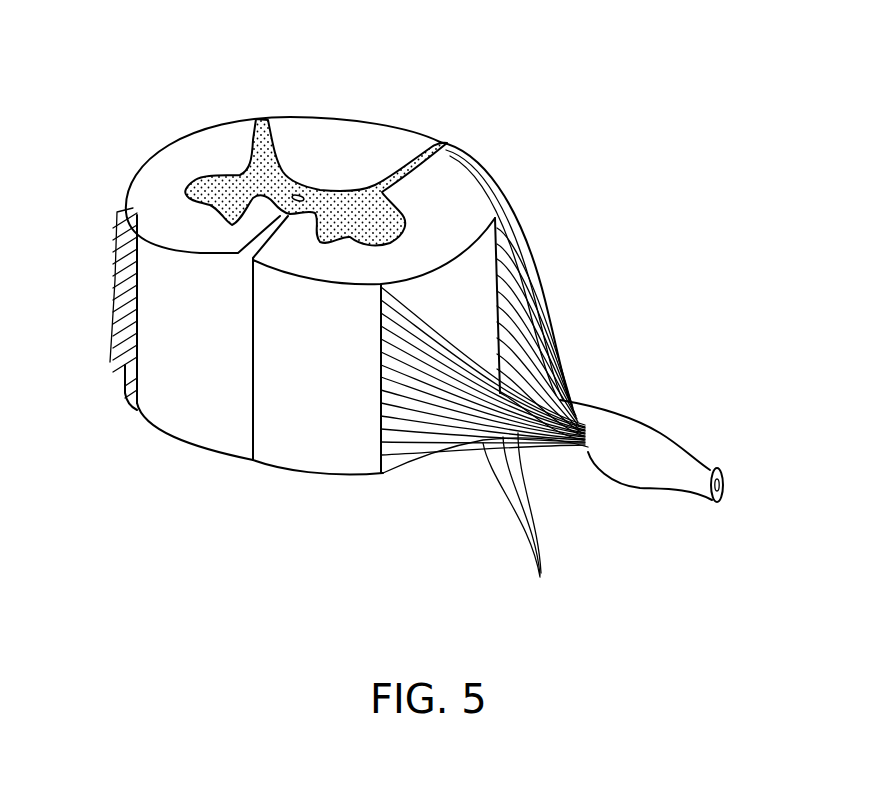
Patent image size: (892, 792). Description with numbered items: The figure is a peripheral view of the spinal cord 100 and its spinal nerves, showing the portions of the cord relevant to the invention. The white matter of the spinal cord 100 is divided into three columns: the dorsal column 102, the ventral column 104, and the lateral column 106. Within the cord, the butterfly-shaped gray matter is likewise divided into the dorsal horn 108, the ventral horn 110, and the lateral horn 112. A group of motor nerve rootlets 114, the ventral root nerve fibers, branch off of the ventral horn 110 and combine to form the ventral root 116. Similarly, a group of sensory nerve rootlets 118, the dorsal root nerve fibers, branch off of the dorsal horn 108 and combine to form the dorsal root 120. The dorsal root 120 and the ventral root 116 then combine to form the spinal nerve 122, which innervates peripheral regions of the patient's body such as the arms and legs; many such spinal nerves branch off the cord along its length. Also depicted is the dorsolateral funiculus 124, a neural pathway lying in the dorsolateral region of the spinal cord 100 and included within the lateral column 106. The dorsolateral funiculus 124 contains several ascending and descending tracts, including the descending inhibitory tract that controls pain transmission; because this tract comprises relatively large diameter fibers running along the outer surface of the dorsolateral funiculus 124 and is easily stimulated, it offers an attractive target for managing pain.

The spinal cord 100 is at (421, 312).
The dorsal column 102 is at (385, 131).
The ventral column 104 is at (185, 228).
The lateral column 106 is at (190, 153).
The dorsal horn 108 is at (258, 120).
The ventral horn 110 is at (187, 193).
The lateral horn 112 is at (487, 211).
The motor nerve rootlets 114 is at (540, 577).
The ventral root 116 is at (592, 445).
The sensory nerve rootlets 118 is at (520, 318).
The dorsal root 120 is at (577, 393).
The spinal nerve 122 is at (725, 485).
The dorsolateral funiculus 124 is at (207, 143).